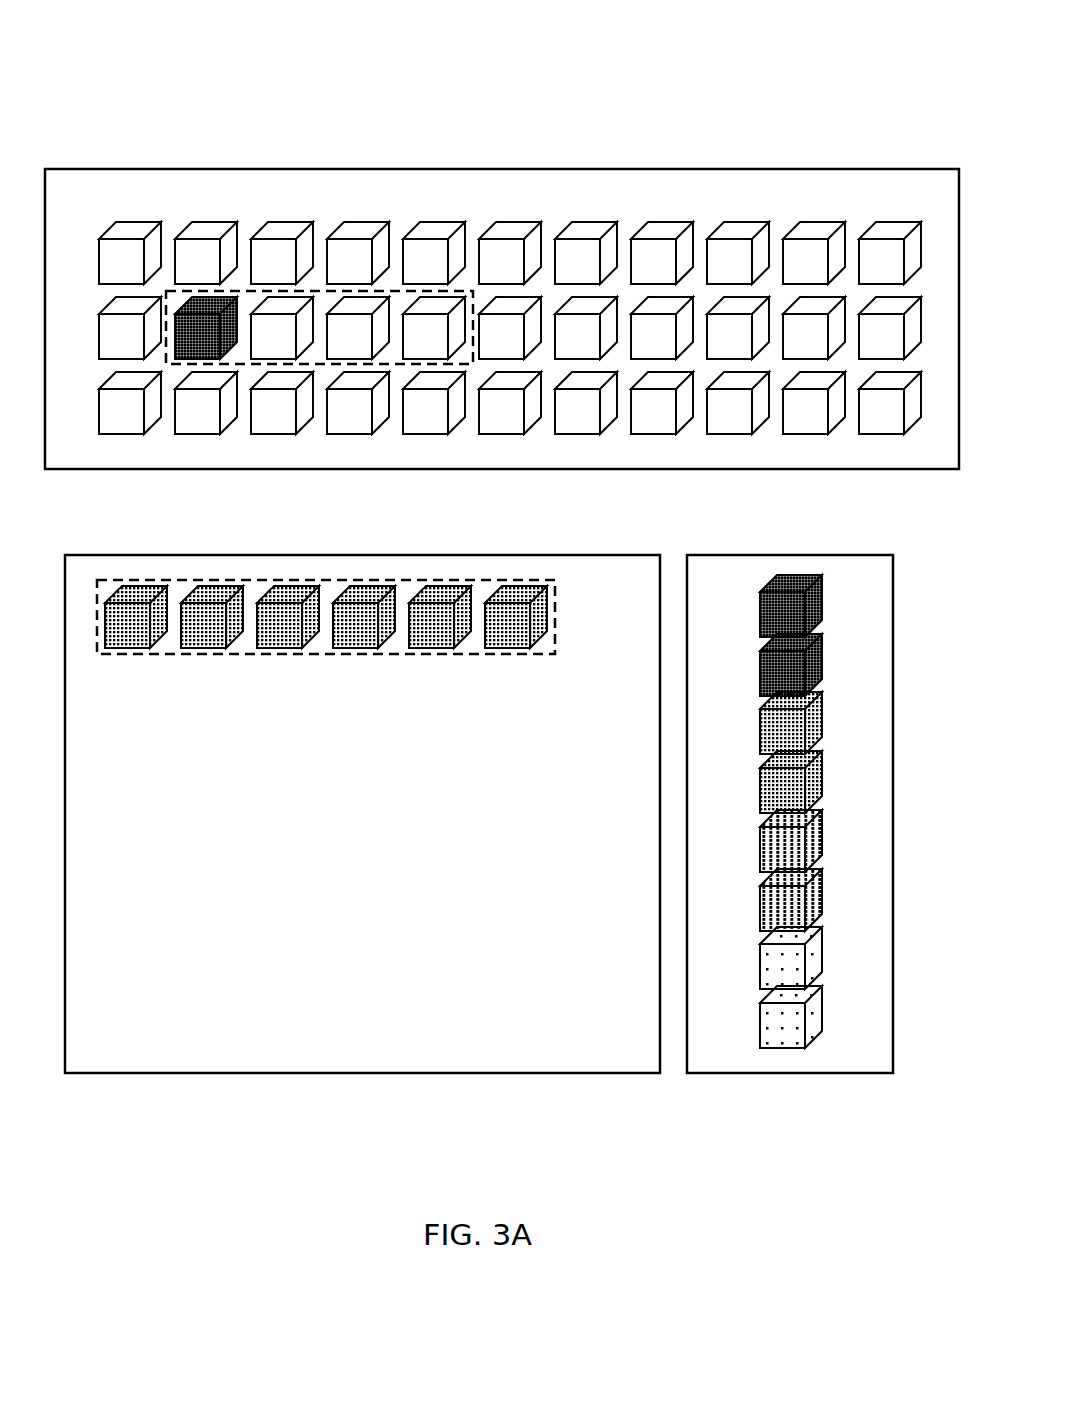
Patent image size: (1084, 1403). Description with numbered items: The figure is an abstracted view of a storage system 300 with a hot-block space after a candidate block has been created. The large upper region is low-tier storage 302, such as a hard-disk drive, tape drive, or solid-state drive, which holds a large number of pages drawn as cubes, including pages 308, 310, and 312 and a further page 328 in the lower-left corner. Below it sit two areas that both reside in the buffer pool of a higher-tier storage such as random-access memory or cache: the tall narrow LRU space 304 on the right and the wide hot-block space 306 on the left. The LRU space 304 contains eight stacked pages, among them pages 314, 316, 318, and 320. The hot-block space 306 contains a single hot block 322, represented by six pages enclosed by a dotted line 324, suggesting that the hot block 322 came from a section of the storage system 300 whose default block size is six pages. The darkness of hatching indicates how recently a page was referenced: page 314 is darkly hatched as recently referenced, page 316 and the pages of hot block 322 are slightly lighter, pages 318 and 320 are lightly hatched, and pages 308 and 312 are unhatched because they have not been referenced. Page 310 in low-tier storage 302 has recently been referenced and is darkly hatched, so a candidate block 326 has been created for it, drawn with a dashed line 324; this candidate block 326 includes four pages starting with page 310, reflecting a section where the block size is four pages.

The storage system 300 is at (170, 40).
The low-tier storage 302 is at (270, 176).
The LRU space 304 is at (866, 562).
The hot-block space 306 is at (571, 562).
The page 308 is at (127, 233).
The page 310 is at (222, 308).
The page 312 is at (513, 305).
The page 314 is at (803, 625).
The page 316 is at (805, 738).
The page 318 is at (796, 962).
The page 320 is at (796, 1038).
The hot block 322 is at (528, 682).
The dotted line 324 is at (556, 637).
The candidate block 326 is at (482, 355).
The data block 328 is at (187, 367).